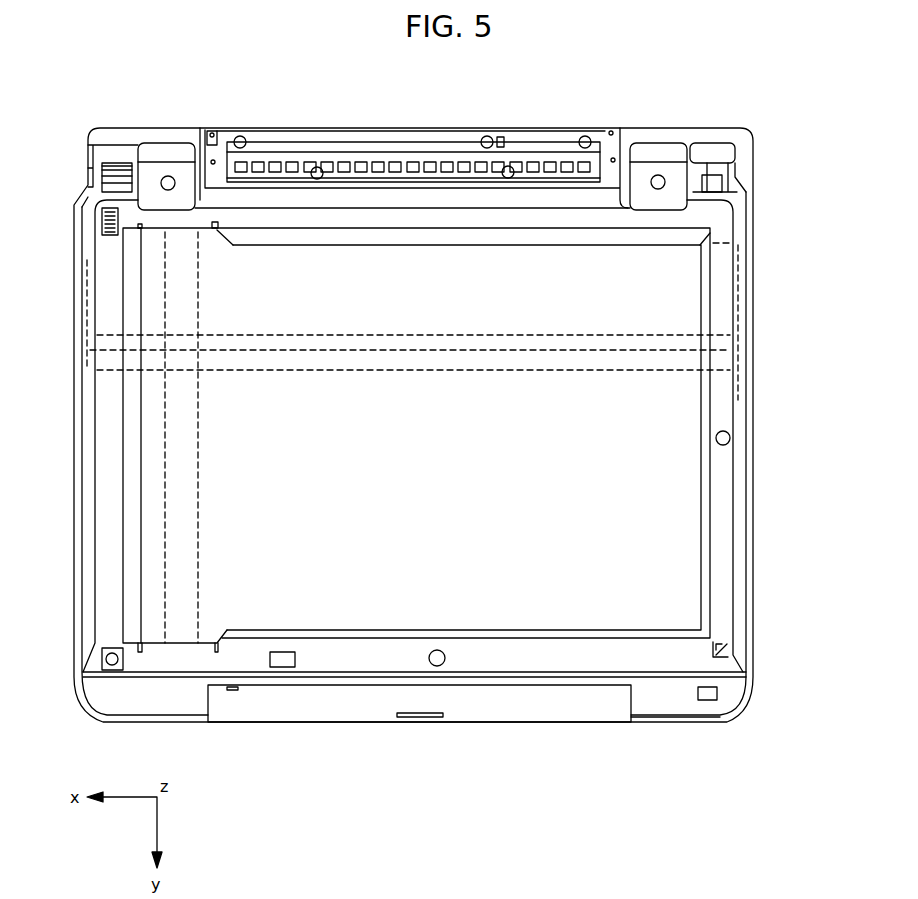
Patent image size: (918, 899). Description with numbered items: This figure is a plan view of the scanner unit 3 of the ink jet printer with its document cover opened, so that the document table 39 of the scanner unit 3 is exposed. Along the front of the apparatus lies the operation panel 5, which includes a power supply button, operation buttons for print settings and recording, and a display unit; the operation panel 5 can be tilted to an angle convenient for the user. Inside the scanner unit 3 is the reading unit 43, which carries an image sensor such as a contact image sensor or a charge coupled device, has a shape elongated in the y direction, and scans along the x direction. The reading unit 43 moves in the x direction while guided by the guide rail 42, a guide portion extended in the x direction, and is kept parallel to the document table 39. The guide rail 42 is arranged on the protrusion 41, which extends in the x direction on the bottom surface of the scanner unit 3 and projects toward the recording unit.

The scanner unit 3 is at (781, 441).
The operation panel 5 is at (547, 707).
The document table 39 is at (688, 541).
The protrusion 41 is at (555, 371).
The guide rail 42 is at (422, 352).
The reading unit 43 is at (200, 528).